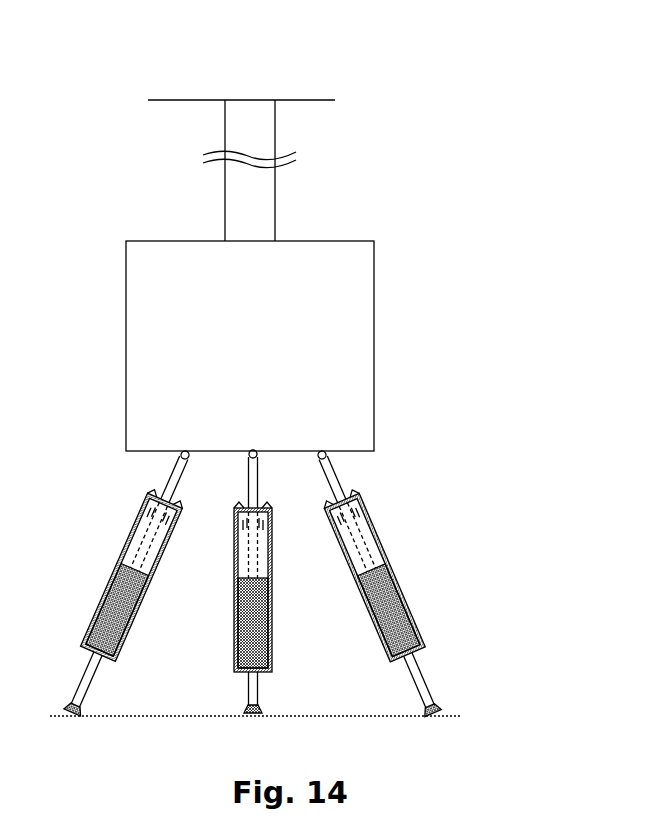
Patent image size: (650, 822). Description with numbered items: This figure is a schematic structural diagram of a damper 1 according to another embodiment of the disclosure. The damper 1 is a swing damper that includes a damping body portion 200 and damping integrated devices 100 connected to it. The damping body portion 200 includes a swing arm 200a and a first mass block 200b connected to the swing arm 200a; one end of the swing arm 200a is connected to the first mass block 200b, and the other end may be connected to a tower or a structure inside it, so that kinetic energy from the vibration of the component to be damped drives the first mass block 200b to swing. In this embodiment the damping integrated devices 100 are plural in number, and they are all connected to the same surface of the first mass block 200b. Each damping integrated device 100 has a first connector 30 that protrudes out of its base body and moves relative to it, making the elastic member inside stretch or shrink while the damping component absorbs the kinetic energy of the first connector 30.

The damper 1 is at (237, 56).
The damping body portion 200 is at (505, 212).
The swing arm 200a is at (257, 211).
The first mass block 200b is at (338, 287).
The first connector 30 is at (172, 474).
The damping integrated device 100 is at (88, 620).